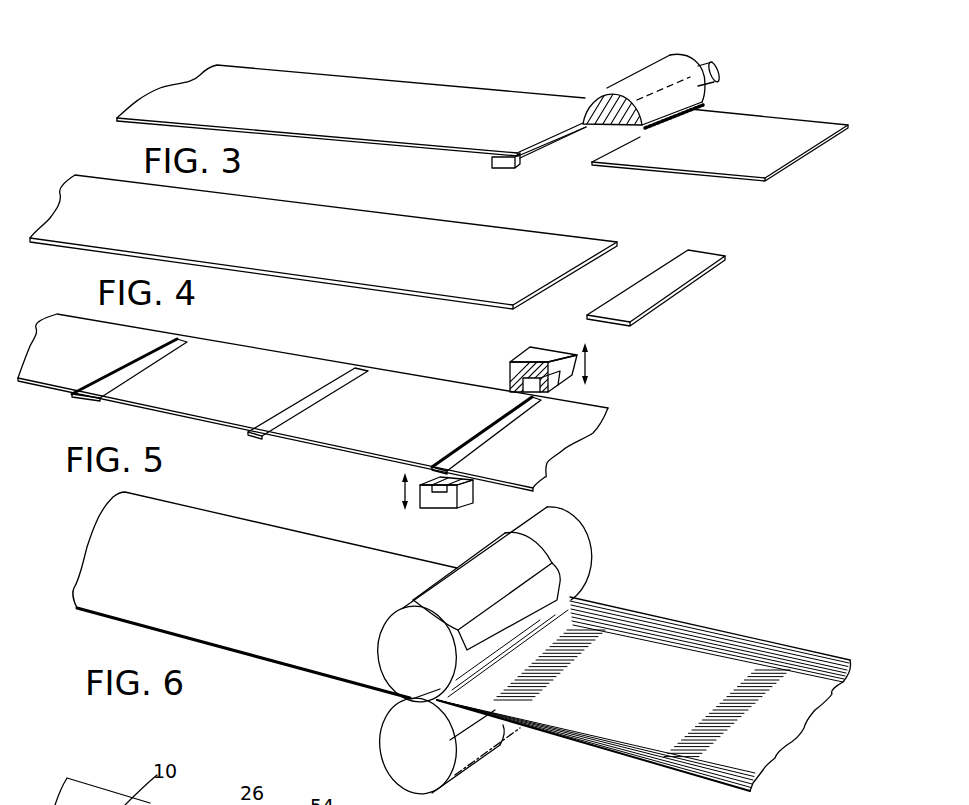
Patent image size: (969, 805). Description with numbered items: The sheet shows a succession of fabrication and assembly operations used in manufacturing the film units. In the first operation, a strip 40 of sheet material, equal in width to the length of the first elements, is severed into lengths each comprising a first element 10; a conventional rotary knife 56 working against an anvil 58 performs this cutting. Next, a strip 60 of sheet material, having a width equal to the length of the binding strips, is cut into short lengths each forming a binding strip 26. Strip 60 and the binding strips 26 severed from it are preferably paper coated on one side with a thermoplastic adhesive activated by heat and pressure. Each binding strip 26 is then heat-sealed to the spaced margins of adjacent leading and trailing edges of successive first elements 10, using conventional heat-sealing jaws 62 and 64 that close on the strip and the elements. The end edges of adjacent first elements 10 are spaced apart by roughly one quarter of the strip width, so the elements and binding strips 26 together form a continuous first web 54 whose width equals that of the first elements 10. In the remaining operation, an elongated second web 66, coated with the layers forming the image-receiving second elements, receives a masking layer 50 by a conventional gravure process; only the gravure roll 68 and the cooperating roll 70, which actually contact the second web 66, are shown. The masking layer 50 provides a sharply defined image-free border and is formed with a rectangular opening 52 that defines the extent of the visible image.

In FIG. 3, the first element 10 is at (750, 113).
In FIG. 5, the first element 10 is at (160, 332).
In FIG. 4, the binding strip 26 is at (672, 283).
In FIG. 5, the binding strip 26 is at (187, 343).
In FIG. 3, the strip of sheet material 40 is at (415, 87).
In FIG. 6, the masking layer 50 is at (647, 630).
In FIG. 6, the rectangular opening 52 is at (540, 690).
In FIG. 5, the first web 54 is at (320, 390).
In FIG. 3, the rotary knife 56 is at (643, 63).
In FIG. 3, the anvil 58 is at (550, 152).
In FIG. 4, the strip of sheet material 60 is at (320, 210).
In FIG. 5, the heat-sealing jaw 62 is at (543, 353).
In FIG. 5, the heat-sealing jaw 64 is at (443, 503).
In FIG. 6, the second web 66 is at (296, 679).
In FIG. 6, the gravure roll 68 is at (583, 540).
In FIG. 6, the roll 70 is at (477, 760).